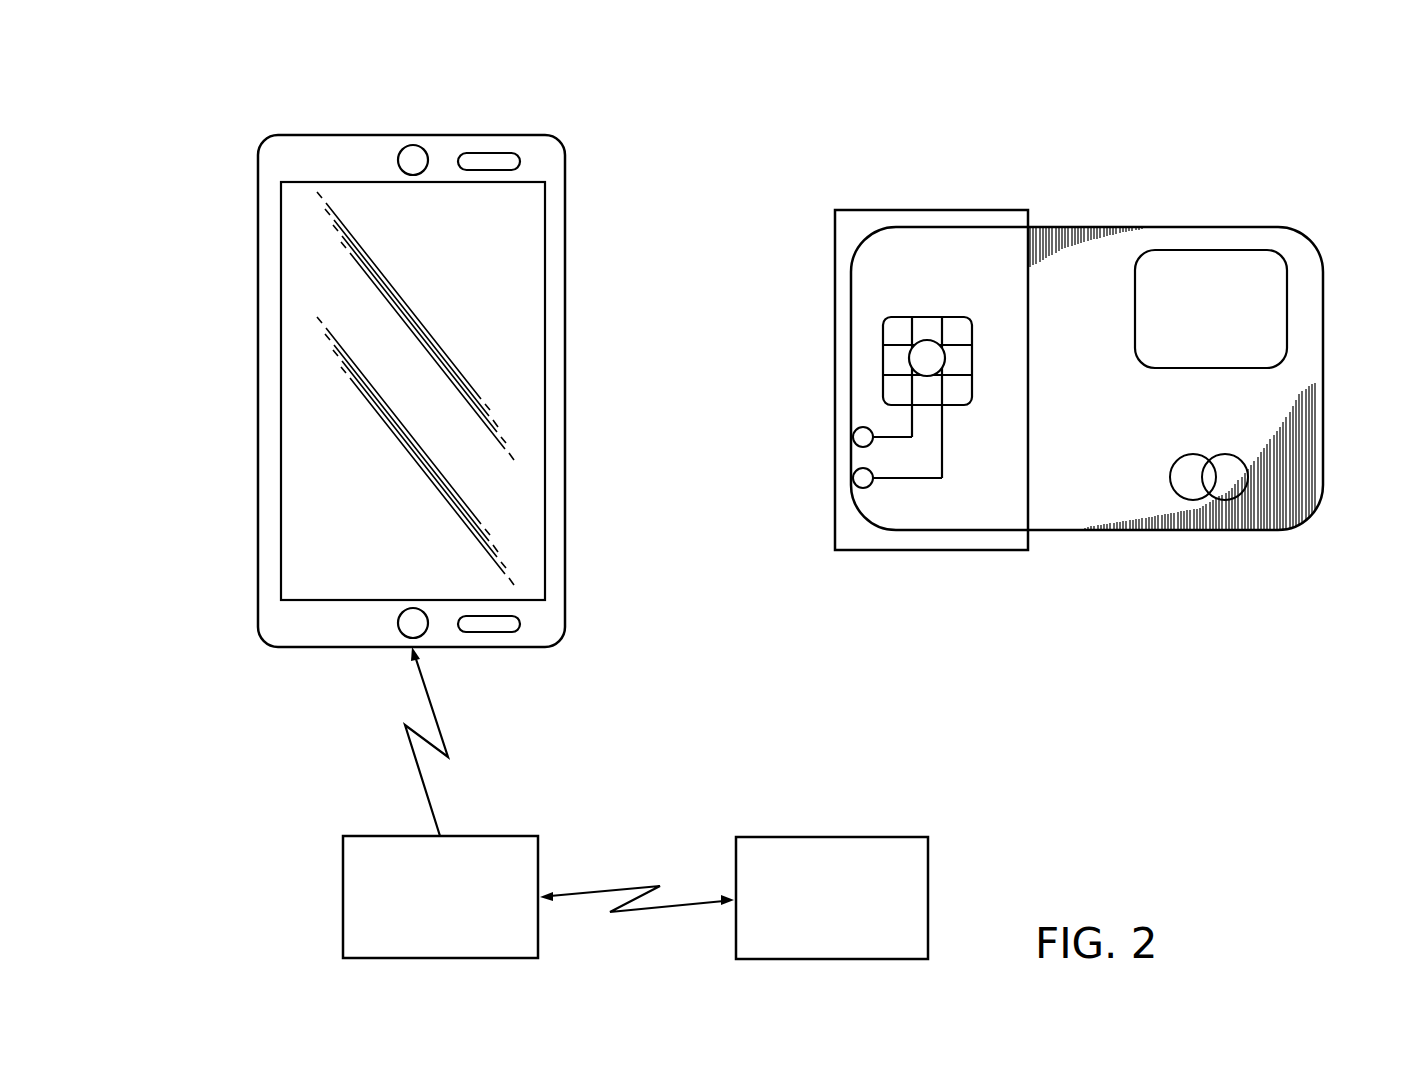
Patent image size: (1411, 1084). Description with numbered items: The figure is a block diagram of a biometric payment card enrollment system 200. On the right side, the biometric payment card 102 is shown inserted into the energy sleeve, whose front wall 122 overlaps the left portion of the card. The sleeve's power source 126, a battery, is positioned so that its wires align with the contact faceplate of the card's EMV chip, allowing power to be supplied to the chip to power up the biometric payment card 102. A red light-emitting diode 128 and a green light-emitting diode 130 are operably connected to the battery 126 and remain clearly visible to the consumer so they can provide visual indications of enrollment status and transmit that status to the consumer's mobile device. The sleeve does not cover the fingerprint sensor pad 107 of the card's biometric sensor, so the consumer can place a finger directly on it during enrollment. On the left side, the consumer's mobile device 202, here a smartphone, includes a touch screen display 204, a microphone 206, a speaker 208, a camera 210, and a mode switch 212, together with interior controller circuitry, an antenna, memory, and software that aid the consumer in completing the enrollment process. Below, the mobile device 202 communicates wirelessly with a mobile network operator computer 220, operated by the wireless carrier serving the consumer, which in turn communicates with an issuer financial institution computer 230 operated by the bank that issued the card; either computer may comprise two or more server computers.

The biometric payment card enrollment system 200 is at (1042, 295).
The biometric payment card 102 is at (1042, 331).
The fingerprint sensor pad 107 is at (1265, 302).
The front wall 122 is at (932, 210).
The power source 126 is at (915, 360).
The red light-emitting diode 128 is at (840, 432).
The green light-emitting diode 130 is at (840, 475).
The mobile device 202 is at (388, 377).
The touch screen display 204 is at (482, 351).
The microphone 206 is at (522, 624).
The speaker 208 is at (526, 146).
The camera 210 is at (392, 139).
The mode switch 212 is at (405, 623).
The mobile network operator computer 220 is at (520, 836).
The issuer financial institution computer 230 is at (912, 837).